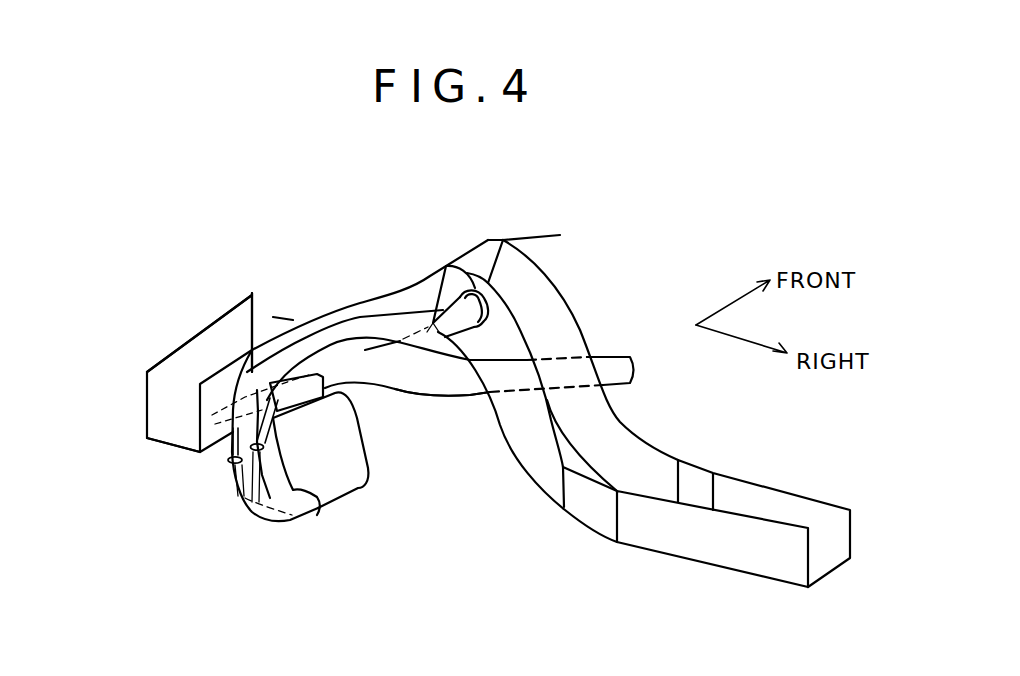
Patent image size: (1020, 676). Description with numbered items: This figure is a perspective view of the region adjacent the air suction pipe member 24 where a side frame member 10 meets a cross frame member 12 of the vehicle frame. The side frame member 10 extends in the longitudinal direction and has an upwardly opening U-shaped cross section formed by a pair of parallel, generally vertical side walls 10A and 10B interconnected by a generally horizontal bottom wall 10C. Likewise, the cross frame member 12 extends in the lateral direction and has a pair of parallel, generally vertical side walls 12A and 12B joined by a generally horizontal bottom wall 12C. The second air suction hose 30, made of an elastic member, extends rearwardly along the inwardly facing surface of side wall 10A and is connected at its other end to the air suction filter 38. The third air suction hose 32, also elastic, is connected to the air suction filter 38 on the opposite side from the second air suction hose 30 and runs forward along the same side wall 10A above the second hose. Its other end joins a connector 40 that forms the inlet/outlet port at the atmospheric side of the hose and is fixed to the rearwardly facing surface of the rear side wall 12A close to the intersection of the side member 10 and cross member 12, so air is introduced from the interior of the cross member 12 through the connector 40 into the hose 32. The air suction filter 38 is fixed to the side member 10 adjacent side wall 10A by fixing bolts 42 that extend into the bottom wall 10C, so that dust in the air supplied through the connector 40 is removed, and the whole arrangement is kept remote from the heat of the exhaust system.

The side frame member 10 is at (172, 356).
The side wall 10A is at (240, 372).
The side wall 10B is at (217, 362).
The bottom wall 10C is at (178, 437).
The cross frame member 12 is at (650, 428).
The side wall 12A is at (673, 550).
The side wall 12B is at (643, 440).
The bottom wall 12C is at (827, 563).
The air suction pipe member 24 is at (398, 400).
The second air suction hose 30 is at (457, 382).
The third air suction hose 32 is at (353, 322).
The air suction filter 38 is at (342, 485).
The connector 40 is at (460, 265).
The fixing bolts 42 is at (228, 463).